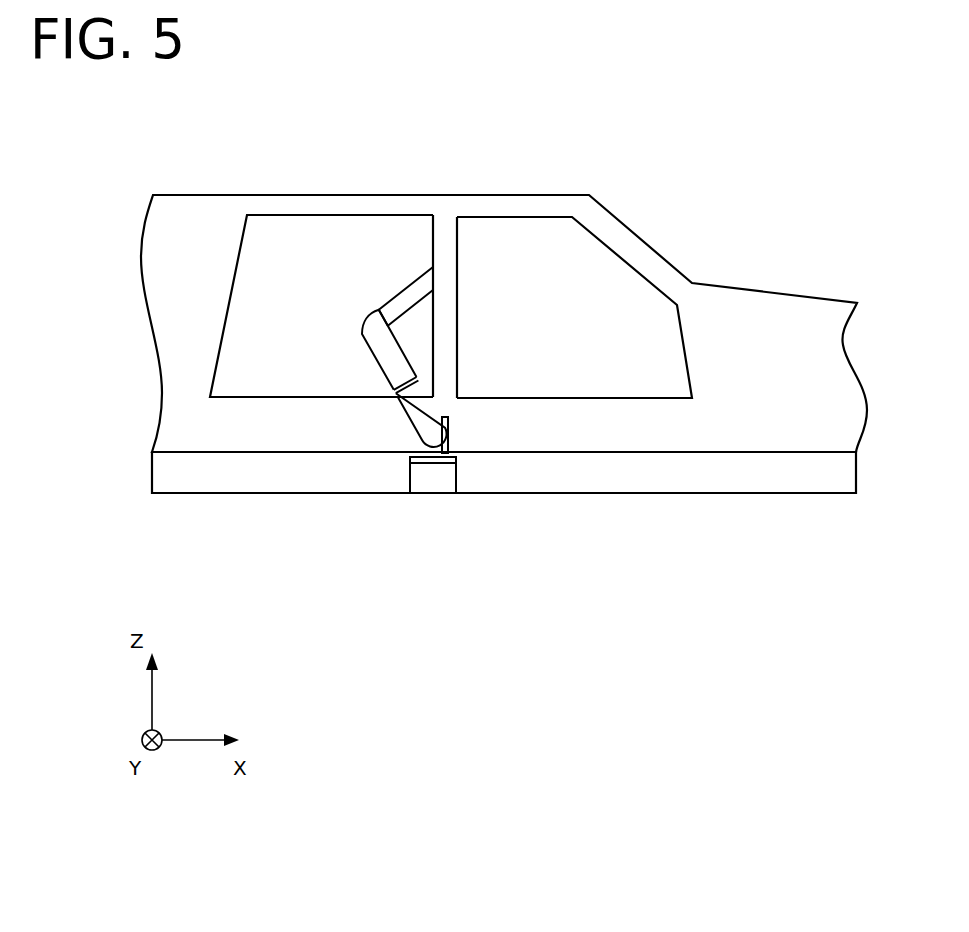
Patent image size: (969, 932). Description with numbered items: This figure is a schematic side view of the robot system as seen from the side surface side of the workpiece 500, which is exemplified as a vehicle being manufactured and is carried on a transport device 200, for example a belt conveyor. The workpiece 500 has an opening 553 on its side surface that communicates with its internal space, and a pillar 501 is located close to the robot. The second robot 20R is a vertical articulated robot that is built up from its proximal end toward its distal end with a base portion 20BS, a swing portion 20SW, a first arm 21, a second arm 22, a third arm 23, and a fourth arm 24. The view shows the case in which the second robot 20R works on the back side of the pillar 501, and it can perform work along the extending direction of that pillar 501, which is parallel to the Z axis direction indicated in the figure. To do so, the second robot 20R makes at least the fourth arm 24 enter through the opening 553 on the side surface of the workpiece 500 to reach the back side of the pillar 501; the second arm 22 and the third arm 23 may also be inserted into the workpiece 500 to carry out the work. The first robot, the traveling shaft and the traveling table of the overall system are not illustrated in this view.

The workpiece 500 is at (590, 165).
The opening on the side surface 553 is at (520, 233).
The pillar 501 is at (448, 313).
The second robot 20R is at (349, 343).
The first arm 21 is at (417, 417).
The second arm 22 is at (383, 350).
The third arm 23 is at (388, 312).
The fourth arm 24 is at (418, 288).
The swing portion 20SW is at (453, 452).
The base portion 20BS is at (432, 475).
The transport device 200 is at (608, 475).